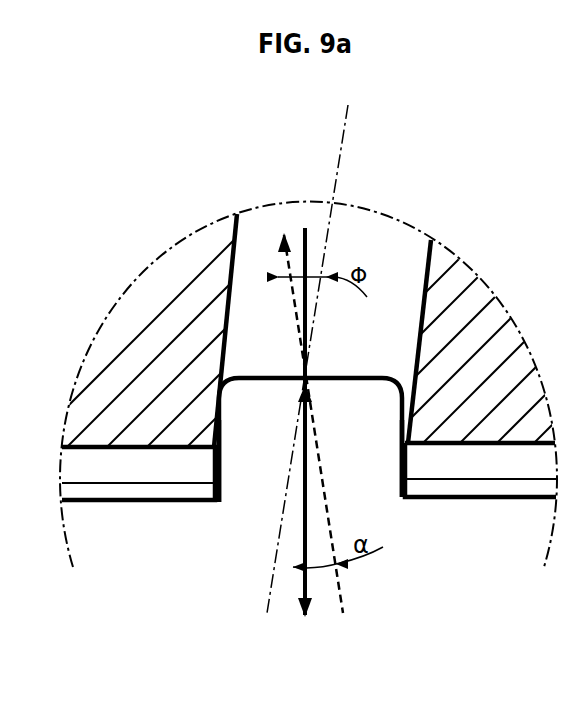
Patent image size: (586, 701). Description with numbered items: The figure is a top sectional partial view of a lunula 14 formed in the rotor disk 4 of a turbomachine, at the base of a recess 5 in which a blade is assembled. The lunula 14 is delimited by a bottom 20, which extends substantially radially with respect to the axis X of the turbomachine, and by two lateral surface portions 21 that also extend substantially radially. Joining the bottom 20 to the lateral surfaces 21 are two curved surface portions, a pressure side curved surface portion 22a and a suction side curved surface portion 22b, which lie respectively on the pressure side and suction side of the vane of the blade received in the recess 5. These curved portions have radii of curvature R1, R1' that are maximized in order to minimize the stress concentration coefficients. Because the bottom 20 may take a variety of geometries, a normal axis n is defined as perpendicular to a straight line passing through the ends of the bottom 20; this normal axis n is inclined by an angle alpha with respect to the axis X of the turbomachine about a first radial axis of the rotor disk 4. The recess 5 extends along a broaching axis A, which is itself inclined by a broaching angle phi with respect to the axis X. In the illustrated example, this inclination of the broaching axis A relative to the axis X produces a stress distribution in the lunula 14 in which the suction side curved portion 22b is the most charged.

The rotor disk 4 is at (479, 395).
The recess 5 is at (271, 338).
The lunula 14 is at (262, 460).
The bottom of the lunula 20 is at (318, 380).
The lateral surface portions 21 is at (219, 472).
The pressure side curved surface portion 22a is at (388, 383).
The suction side curved surface portion 22b is at (221, 380).
The broaching axis A is at (333, 176).
The axis of the turbomachine X is at (328, 506).
The normal axis n is at (307, 547).
The radius of curvature R1 is at (155, 333).
The radius of curvature R1' is at (465, 343).